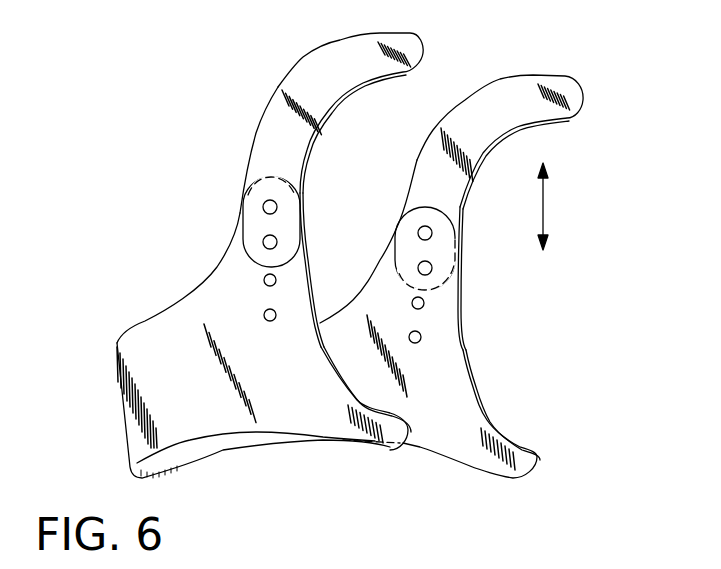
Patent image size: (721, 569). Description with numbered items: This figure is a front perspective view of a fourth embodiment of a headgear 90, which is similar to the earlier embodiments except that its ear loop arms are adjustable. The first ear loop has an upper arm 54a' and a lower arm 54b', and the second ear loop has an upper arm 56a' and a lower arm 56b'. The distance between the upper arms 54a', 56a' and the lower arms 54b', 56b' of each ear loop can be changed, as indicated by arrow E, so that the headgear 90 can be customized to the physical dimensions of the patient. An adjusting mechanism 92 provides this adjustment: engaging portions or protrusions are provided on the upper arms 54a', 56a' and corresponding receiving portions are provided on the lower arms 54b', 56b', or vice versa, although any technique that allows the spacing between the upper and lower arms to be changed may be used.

The headgear 90 is at (123, 293).
The adjusting mechanism 92 is at (215, 165).
The upper arm of first ear loop 54a' is at (316, 106).
The lower arm of first ear loop 54b' is at (382, 430).
The upper arm of second ear loop 56a' is at (541, 118).
The lower arm of second ear loop 56b' is at (508, 438).
The arrow indicating adjustment direction E is at (543, 206).